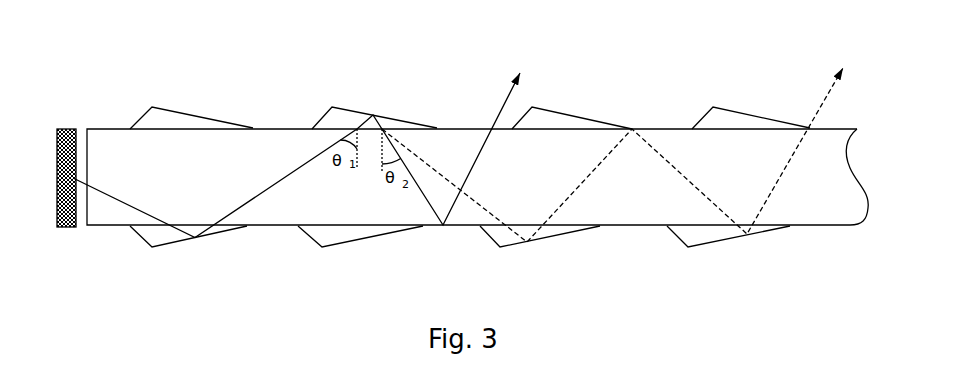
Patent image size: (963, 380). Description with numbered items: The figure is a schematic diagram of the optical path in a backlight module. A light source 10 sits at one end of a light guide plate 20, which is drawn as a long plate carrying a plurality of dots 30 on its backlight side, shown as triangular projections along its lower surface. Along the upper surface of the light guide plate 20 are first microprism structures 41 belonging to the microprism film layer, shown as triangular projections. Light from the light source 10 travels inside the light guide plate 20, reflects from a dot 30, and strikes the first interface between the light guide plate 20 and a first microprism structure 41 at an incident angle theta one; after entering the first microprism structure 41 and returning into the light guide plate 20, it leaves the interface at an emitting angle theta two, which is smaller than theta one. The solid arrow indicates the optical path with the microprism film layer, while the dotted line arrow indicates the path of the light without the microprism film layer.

The light source 10 is at (64, 128).
The light guide plate 20 is at (828, 170).
The dots 30 is at (335, 240).
The first microprism structures 41 is at (727, 110).